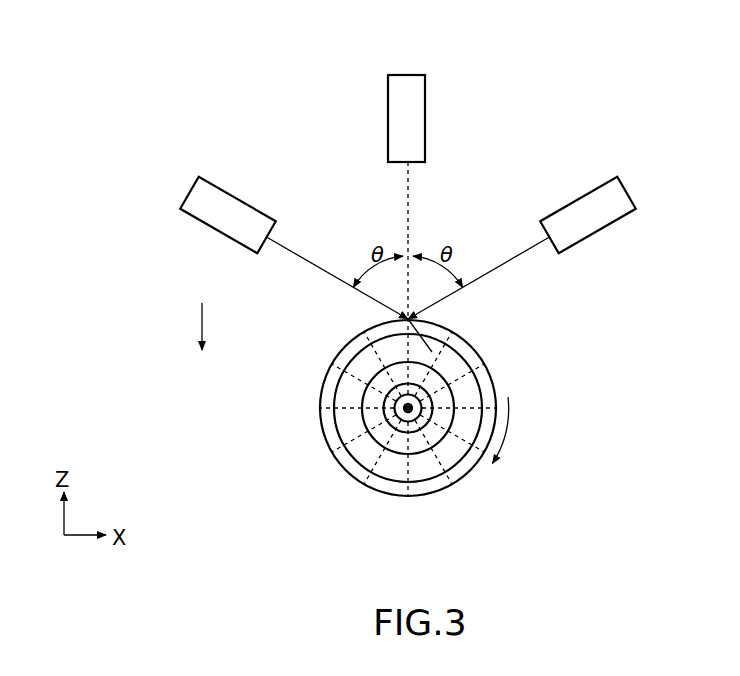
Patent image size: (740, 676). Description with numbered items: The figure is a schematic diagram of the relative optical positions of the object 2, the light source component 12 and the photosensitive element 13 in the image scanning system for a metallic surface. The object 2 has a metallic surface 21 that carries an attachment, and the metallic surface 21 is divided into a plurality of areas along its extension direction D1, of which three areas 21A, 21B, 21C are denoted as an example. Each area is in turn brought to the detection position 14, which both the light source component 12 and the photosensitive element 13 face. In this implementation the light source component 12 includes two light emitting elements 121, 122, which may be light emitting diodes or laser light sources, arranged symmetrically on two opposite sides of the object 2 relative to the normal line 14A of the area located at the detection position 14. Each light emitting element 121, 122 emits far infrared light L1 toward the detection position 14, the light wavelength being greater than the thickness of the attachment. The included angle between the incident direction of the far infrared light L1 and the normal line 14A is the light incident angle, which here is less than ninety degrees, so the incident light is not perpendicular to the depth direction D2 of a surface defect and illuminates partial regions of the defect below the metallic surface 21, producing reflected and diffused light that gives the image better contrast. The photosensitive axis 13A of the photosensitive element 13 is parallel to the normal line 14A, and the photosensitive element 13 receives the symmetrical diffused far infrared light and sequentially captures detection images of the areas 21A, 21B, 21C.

The object 2 is at (370, 409).
The light source component 12 is at (150, 62).
The light emitting element 121 is at (232, 193).
The light emitting element 122 is at (585, 193).
The photosensitive element 13 is at (425, 118).
The photosensitive axis 13A is at (408, 183).
The detection position 14 is at (432, 352).
The normal line 14A is at (408, 220).
The metallic surface 21 is at (347, 409).
The area 21A is at (392, 322).
The area 21B is at (320, 433).
The area 21C is at (348, 442).
The far infrared light L1 is at (287, 248).
The extension direction D1 is at (492, 446).
The depth direction D2 is at (184, 326).